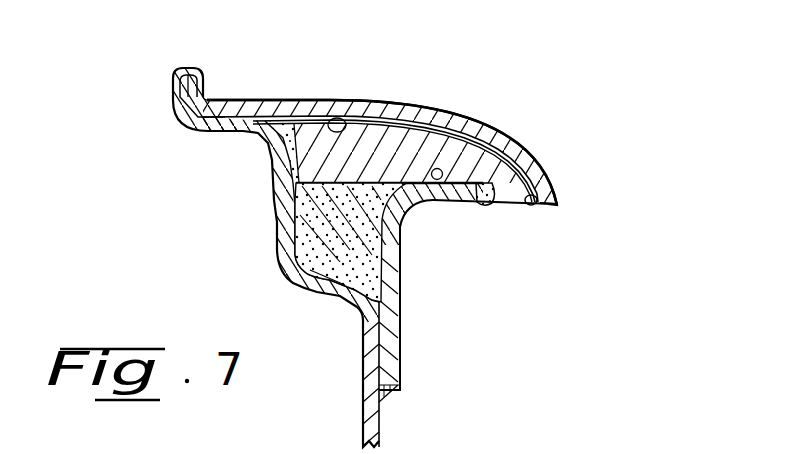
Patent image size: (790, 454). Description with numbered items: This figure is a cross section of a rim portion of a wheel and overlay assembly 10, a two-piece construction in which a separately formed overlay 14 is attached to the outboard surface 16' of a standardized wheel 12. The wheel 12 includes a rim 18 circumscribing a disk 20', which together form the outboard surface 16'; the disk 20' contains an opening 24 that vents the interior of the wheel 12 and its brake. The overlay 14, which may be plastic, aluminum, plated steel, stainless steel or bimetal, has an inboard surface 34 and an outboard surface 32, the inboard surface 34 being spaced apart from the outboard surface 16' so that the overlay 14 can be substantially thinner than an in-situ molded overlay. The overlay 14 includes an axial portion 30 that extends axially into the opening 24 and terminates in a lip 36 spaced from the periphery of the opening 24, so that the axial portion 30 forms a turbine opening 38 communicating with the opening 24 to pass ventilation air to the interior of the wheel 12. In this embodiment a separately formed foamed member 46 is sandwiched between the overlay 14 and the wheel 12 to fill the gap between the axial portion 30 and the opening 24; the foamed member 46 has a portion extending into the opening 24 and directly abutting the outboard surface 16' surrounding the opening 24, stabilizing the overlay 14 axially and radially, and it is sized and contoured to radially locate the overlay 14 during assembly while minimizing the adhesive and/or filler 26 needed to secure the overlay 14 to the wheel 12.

The wheel and overlay assembly 10 is at (133, 130).
The wheel 12 is at (279, 251).
The overlay 14 is at (445, 115).
The outboard surface 16' is at (375, 236).
The rim 18 is at (285, 176).
The disk 20' is at (424, 315).
The opening 24 is at (510, 203).
The adhesive and/or filler 26 is at (488, 210).
The axial portion 30 is at (527, 167).
The outboard surface 32 is at (492, 175).
The inboard surface 34 is at (324, 120).
The lip 36 is at (551, 209).
The turbine opening 38 is at (557, 203).
The foamed member 46 is at (392, 140).